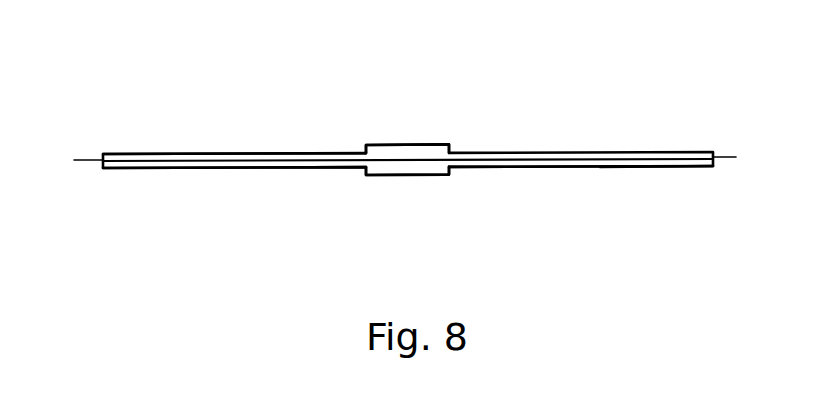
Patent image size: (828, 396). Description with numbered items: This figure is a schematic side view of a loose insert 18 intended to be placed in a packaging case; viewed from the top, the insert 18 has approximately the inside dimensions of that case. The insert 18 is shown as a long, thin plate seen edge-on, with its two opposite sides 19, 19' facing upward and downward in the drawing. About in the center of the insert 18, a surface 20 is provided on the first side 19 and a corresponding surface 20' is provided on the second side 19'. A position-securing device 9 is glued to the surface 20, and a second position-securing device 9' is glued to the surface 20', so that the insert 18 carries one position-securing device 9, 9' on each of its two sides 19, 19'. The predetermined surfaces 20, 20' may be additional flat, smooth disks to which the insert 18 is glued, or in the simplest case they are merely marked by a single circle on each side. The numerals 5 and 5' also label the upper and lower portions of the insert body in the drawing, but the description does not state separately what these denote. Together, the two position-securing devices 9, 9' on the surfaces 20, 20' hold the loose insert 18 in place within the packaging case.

The first tube wall 5 is at (408, 111).
The second tube wall 5' is at (234, 210).
The position-securing device 9 is at (427, 89).
The position-securing device 9' is at (387, 204).
The insert 18 is at (601, 195).
The side of insert 19 is at (696, 116).
The side of insert 19' is at (400, 196).
The surface 20 is at (234, 93).
The surface 20' is at (581, 210).